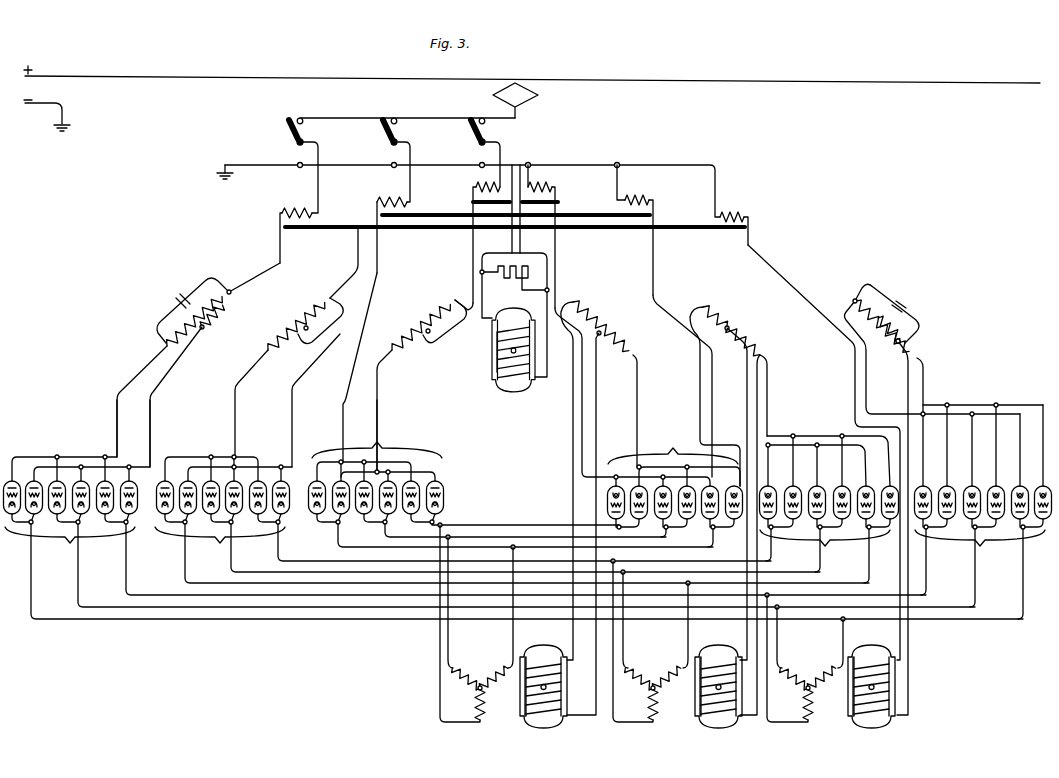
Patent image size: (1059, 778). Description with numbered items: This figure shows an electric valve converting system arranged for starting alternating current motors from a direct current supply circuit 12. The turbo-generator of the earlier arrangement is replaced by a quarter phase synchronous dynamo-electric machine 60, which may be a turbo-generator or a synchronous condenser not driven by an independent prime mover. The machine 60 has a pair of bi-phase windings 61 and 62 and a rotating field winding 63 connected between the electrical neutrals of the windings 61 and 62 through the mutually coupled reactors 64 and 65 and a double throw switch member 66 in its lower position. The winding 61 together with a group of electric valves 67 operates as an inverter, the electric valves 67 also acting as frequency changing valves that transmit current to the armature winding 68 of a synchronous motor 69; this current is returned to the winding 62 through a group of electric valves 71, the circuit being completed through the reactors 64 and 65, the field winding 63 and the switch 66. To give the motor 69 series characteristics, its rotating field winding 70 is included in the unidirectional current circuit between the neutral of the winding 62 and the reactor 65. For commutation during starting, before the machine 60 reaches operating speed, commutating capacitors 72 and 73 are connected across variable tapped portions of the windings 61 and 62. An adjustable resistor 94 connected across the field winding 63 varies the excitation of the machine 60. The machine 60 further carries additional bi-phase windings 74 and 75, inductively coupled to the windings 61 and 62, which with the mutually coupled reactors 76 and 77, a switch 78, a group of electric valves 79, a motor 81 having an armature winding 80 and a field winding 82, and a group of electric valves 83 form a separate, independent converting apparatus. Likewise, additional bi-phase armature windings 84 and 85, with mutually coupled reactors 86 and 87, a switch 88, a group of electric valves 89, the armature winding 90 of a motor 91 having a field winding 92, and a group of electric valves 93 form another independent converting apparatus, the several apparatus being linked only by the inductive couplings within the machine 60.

The direct current supply circuit 12 is at (53, 78).
The quarter phase synchronous dynamo-electric machine 60 is at (516, 418).
The bi-phase winding 61 is at (165, 347).
The bi-phase winding 62 is at (917, 356).
The rotating field winding 63 is at (493, 355).
The mutually coupled reactor 64 is at (292, 207).
The mutually coupled reactor 65 is at (732, 213).
The double throw switch member 66 is at (291, 142).
The group of electric valves 67 is at (514, 509).
The armature winding 68 is at (808, 678).
The synchronous motor 69 is at (835, 745).
The rotating field winding 70 is at (852, 691).
The group of electric valves 71 is at (983, 511).
The commutating capacitor 72 is at (180, 297).
The commutating capacitor 73 is at (904, 308).
The bi-phase winding 74 is at (298, 321).
The bi-phase winding 75 is at (742, 327).
The mutually coupled reactor 76 is at (391, 194).
The mutually coupled reactor 77 is at (637, 196).
The switch 78 is at (387, 139).
The group of electric valves 79 is at (512, 519).
The armature winding 80 is at (653, 678).
The motor 81 is at (680, 745).
The field winding 82 is at (697, 691).
The group of electric valves 83 is at (829, 508).
The bi-phase armature winding 84 is at (415, 330).
The bi-phase armature winding 85 is at (618, 339).
The mutually coupled reactor 86 is at (477, 190).
The mutually coupled reactor 87 is at (548, 190).
The switch 88 is at (475, 141).
The group of electric valves 89 is at (511, 473).
The armature winding 90 is at (480, 678).
The motor 91 is at (503, 745).
The field winding 92 is at (522, 691).
The group of electric valves 93 is at (675, 489).
The adjustable resistor 94 is at (514, 280).